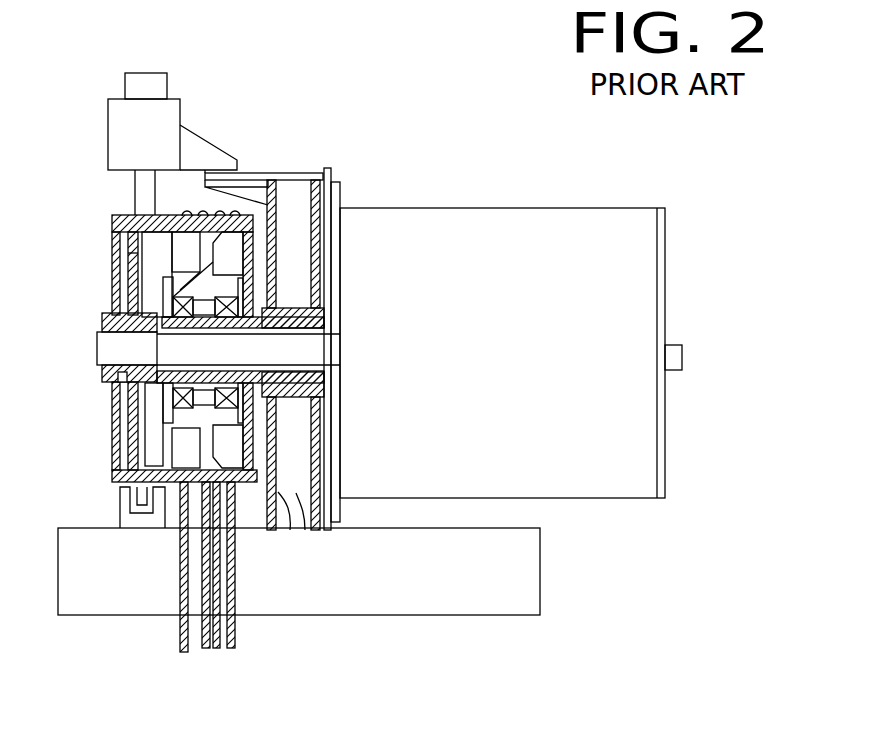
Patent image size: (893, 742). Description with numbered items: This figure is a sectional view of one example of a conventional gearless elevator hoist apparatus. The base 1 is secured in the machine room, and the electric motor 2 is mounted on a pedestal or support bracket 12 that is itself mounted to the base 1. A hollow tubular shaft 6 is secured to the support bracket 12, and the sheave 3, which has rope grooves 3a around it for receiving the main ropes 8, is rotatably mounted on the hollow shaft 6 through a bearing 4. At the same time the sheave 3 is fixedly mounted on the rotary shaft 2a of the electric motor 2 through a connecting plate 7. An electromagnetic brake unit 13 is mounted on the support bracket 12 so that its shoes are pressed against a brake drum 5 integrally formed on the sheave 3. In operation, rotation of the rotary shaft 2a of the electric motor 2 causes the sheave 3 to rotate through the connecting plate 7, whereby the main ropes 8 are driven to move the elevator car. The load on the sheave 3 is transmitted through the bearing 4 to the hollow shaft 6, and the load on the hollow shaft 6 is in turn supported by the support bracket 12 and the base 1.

The base 1 is at (400, 616).
The electric motor 2 is at (470, 209).
The rotary shaft 2a is at (97, 350).
The sheave 3 is at (180, 217).
The rope grooves 3a is at (220, 215).
The bearing 4 is at (254, 258).
The brake drum 5 is at (121, 215).
The hollow tubular shaft 6 is at (306, 298).
The connecting plate 7 is at (135, 265).
The main ropes 8 is at (180, 638).
The support bracket 12 is at (290, 530).
The electromagnetic brake unit 13 is at (123, 138).